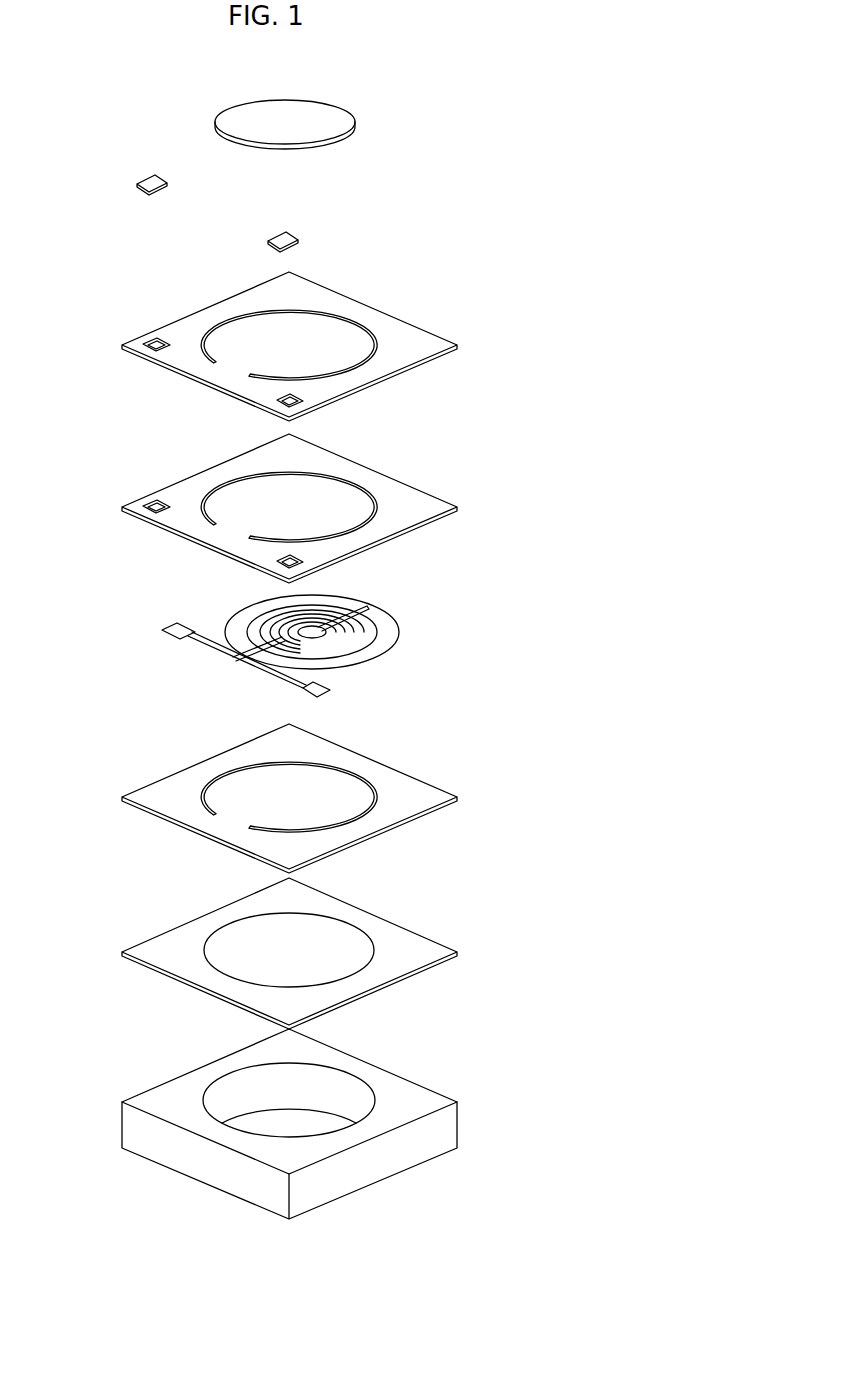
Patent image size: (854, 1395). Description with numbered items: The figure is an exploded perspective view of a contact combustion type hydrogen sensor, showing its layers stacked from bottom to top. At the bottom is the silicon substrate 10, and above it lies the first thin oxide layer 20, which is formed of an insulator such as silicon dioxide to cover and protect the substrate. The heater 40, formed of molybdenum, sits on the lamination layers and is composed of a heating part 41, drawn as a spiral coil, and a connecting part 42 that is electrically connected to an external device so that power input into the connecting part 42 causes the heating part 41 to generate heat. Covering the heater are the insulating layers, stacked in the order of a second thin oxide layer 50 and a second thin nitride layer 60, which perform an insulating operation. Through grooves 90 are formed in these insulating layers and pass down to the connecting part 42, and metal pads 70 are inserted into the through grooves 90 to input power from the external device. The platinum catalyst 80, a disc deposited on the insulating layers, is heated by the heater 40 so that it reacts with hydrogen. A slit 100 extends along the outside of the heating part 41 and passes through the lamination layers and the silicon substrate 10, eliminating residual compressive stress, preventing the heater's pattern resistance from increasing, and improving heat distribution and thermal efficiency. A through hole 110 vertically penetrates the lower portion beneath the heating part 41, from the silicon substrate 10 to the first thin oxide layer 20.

The silicon substrate 10 is at (422, 1098).
The first thin oxide layer 20 is at (433, 950).
The heater 40 is at (283, 631).
The heating part 41 is at (375, 617).
The connecting part 42 is at (303, 688).
The second thin oxide layer 50 is at (430, 508).
The second thin nitride layer 60 is at (430, 346).
The metal pads 70 is at (268, 239).
The platinum catalyst 80 is at (340, 128).
The through grooves 90 is at (122, 344).
The slit 100 is at (370, 330).
The through hole 110 is at (258, 1097).